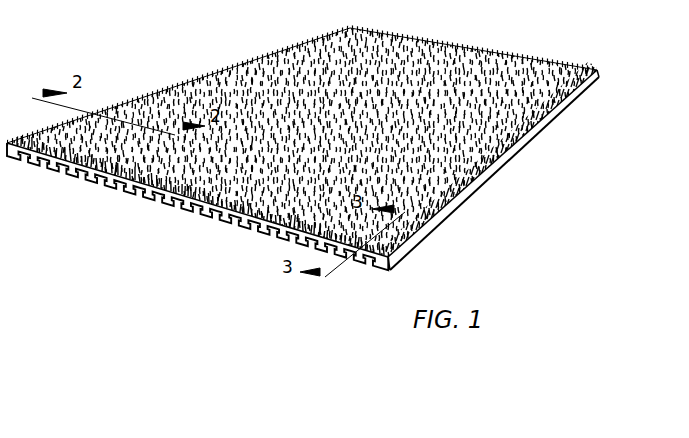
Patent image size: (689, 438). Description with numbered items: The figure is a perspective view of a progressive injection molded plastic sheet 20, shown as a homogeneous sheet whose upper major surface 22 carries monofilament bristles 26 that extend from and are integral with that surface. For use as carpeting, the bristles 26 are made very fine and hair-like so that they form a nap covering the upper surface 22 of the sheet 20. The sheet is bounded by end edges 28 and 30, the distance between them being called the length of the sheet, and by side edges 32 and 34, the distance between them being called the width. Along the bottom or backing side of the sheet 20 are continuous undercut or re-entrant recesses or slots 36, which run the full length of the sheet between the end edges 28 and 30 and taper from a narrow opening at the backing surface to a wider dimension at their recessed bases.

The progressive injection molded plastic sheet 20 is at (219, 52).
The upper major surface 22 is at (479, 174).
The monofilament bristles 26 is at (88, 152).
The end edge 28 is at (166, 188).
The end edge 30 is at (566, 63).
The side edge 32 is at (541, 129).
The side edge 34 is at (162, 86).
The undercut slots 36 is at (245, 222).